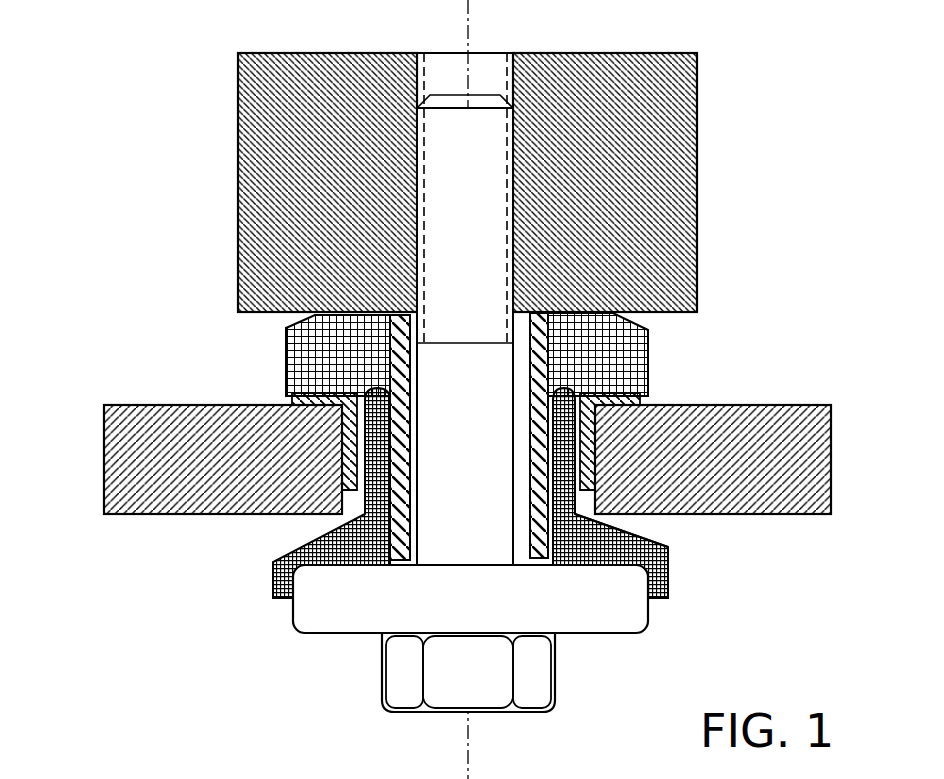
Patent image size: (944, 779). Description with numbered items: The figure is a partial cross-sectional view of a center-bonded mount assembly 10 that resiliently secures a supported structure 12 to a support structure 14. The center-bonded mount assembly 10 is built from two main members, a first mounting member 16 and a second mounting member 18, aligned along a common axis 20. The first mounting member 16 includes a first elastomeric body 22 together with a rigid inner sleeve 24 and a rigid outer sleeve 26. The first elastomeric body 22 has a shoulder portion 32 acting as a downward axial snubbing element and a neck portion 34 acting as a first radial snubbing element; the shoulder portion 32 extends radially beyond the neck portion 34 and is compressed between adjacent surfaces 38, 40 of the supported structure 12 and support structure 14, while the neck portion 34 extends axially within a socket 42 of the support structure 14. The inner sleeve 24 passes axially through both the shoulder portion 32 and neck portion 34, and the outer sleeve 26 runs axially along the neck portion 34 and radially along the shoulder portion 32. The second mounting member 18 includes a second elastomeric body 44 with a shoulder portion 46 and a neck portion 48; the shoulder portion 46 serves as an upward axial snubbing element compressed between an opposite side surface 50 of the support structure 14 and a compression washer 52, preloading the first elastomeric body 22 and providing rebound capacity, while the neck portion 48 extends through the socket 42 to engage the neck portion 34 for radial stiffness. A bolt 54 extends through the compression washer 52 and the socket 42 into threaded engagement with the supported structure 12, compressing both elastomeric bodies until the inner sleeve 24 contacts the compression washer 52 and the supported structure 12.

The center-bonded mount assembly 10 is at (461, 389).
The supported structure 12 is at (280, 152).
The support structure 14 is at (191, 477).
The first mounting member 16 is at (432, 319).
The second mounting member 18 is at (437, 532).
The common axis 20 is at (468, 17).
The first elastomeric body 22 is at (620, 353).
The rigid inner sleeve 24 is at (535, 575).
The rigid outer sleeve 26 is at (650, 393).
The shoulder portion 32 is at (285, 367).
The neck portion 34 is at (343, 443).
The adjacent surface 38 is at (666, 315).
The adjacent surface 40 is at (727, 441).
The socket 42 is at (630, 516).
The second elastomeric body 44 is at (647, 537).
The shoulder portion 46 is at (663, 545).
The neck portion 48 is at (592, 440).
The opposite side surface 50 is at (140, 514).
The compression washer 52 is at (357, 600).
The bolt 54 is at (490, 180).